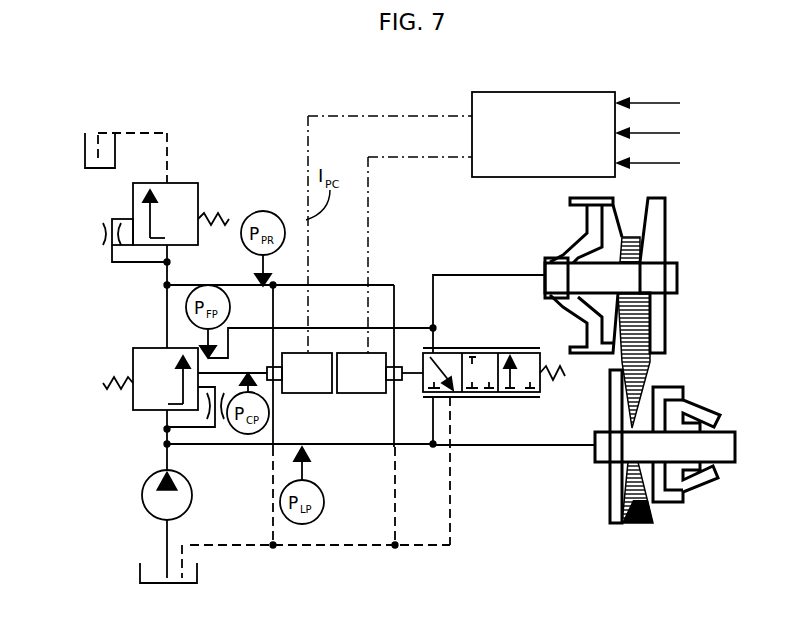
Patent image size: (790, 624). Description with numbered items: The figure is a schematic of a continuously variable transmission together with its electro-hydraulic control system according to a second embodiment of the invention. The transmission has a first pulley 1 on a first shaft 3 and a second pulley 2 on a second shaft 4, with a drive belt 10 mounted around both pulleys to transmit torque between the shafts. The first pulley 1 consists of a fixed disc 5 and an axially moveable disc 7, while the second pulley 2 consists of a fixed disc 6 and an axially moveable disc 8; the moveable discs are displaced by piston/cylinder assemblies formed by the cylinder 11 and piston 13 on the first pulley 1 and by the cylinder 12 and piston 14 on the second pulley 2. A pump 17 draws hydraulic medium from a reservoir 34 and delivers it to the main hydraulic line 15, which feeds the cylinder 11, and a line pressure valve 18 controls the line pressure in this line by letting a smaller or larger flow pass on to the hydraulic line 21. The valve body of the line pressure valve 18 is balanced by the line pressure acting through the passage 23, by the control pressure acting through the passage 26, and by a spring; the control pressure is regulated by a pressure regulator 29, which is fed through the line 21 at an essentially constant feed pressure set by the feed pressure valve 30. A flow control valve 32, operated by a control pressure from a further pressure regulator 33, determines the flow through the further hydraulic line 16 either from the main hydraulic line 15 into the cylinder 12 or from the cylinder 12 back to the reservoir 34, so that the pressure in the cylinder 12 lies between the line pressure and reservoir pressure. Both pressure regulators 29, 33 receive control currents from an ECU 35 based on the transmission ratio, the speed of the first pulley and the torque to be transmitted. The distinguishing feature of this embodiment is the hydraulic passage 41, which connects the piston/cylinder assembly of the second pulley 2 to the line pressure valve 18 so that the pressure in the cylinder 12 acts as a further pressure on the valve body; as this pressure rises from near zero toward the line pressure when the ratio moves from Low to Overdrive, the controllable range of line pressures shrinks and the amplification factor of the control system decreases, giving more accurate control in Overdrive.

The first pulley 1 is at (653, 463).
The second pulley 2 is at (630, 265).
The first shaft 3 is at (735, 447).
The second shaft 4 is at (677, 277).
The fixed disc 5 is at (620, 480).
The fixed disc 6 is at (655, 305).
The axially moveable disc 7 is at (655, 510).
The axially moveable disc 8 is at (610, 223).
The drive belt 10 is at (650, 357).
The cylinder 11 is at (663, 485).
The cylinder 12 is at (588, 230).
The piston 13 is at (718, 420).
The piston 14 is at (560, 307).
The main hydraulic line 15 is at (390, 448).
The further hydraulic line 16 is at (490, 275).
The pump 17 is at (143, 505).
The line pressure valve 18 is at (114, 341).
The hydraulic line 21 is at (176, 280).
The passage 23 is at (183, 430).
The passage 26 is at (213, 372).
The pressure regulator 29 is at (318, 393).
The feed pressure valve 30 is at (202, 167).
The flow control valve 32 is at (440, 348).
The pressure regulator 33 is at (347, 393).
The reservoir 34 is at (86, 153).
The ECU 35 is at (490, 92).
The hydraulic passage 41 is at (372, 328).